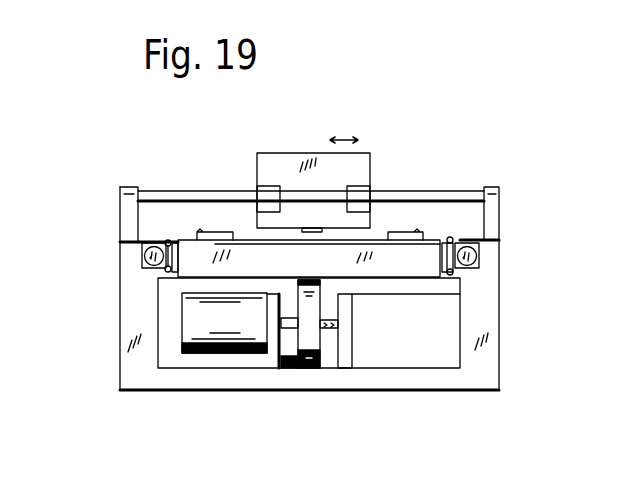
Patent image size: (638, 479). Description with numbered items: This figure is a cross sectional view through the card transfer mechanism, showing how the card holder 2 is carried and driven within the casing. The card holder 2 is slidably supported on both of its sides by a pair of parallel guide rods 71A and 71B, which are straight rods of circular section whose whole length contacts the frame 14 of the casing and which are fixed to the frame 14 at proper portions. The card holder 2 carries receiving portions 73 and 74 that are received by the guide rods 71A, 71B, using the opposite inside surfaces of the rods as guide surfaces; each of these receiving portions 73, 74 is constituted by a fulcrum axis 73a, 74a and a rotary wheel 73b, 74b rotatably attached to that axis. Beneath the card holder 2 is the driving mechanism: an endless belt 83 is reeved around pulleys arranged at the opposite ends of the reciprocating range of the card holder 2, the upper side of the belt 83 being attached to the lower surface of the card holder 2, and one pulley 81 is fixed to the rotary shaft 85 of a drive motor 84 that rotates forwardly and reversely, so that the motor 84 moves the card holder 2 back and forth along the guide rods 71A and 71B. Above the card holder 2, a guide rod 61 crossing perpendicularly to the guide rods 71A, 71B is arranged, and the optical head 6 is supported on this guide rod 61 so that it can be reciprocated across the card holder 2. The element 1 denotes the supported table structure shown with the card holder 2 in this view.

The stage 1 is at (375, 248).
The card holder 2 is at (410, 263).
The optical head 6 is at (275, 160).
The frame 14 is at (130, 257).
The guide rod 61 is at (402, 191).
The guide rod 71A is at (141, 262).
The guide rod 71B is at (477, 268).
The receiving portion 73 is at (180, 228).
The axis 73a is at (166, 241).
The rotary wheel 73b is at (172, 242).
The receiving portion 74 is at (467, 238).
The axis 74a is at (458, 240).
The rotary wheel 74b is at (450, 237).
The pulley 81 is at (310, 368).
The endless belt 83 is at (315, 338).
The drive motor 84 is at (218, 353).
The rotary shaft 85 is at (289, 335).